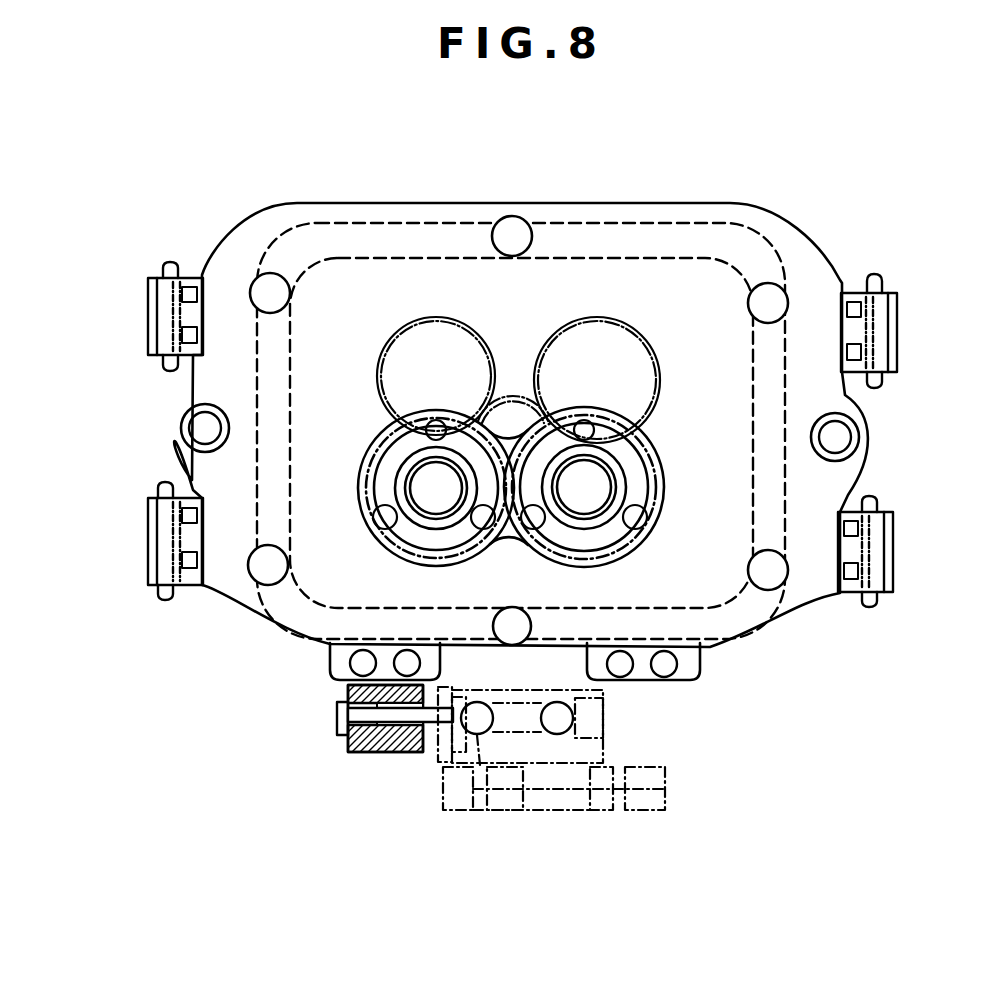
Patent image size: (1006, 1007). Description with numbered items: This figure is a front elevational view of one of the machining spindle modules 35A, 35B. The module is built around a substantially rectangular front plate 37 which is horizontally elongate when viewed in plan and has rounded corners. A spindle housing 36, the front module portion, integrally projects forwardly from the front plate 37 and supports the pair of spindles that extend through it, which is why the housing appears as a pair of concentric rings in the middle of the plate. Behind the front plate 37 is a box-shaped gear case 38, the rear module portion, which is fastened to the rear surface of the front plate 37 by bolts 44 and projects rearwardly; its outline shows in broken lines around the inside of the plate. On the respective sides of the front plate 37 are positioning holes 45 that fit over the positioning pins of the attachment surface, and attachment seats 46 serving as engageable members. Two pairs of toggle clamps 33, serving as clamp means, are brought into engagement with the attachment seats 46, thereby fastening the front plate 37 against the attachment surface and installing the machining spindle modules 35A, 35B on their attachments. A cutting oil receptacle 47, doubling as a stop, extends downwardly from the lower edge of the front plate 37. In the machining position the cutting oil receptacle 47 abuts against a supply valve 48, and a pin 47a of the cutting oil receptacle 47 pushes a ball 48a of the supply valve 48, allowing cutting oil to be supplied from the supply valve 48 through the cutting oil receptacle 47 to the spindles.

The machining spindle module 35A is at (514, 400).
The machining spindle module 35B is at (462, 198).
The front plate 37 is at (701, 202).
The gear case 38 is at (752, 248).
The bolts 44 is at (265, 277).
The positioning holes 45 is at (205, 430).
The attachment seats 46 is at (147, 296).
The toggle clamps 33 is at (163, 325).
The spindle housing 36 is at (647, 530).
The cutting oil receptacle 47 is at (360, 742).
The pin 47a is at (408, 722).
The supply valve 48 is at (552, 800).
The ball 48a is at (480, 765).